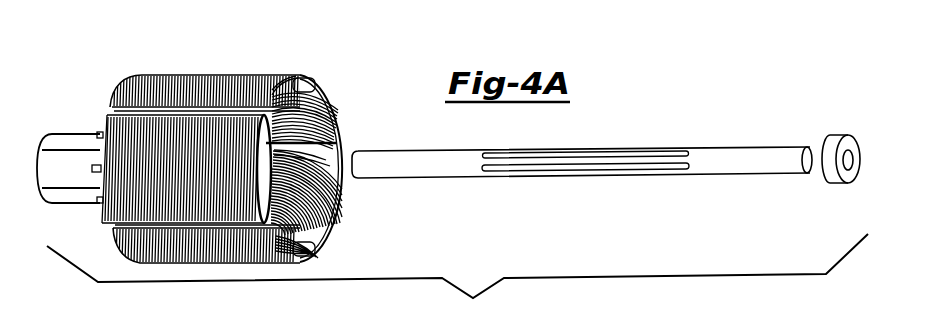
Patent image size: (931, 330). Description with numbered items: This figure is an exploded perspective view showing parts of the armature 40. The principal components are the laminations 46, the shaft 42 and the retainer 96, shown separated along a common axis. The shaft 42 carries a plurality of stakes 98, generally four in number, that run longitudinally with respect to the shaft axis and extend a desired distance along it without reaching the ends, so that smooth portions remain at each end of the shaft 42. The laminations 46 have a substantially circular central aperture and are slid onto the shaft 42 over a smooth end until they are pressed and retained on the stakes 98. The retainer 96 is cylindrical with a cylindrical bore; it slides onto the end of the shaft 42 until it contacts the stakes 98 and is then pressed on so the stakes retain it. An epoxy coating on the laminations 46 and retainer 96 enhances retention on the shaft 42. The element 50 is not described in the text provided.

The armature 40 is at (457, 281).
The shaft 42 is at (730, 158).
The laminations 46 is at (227, 72).
The connector 50 is at (72, 140).
The retainer 96 is at (830, 143).
The stakes 98 is at (588, 154).